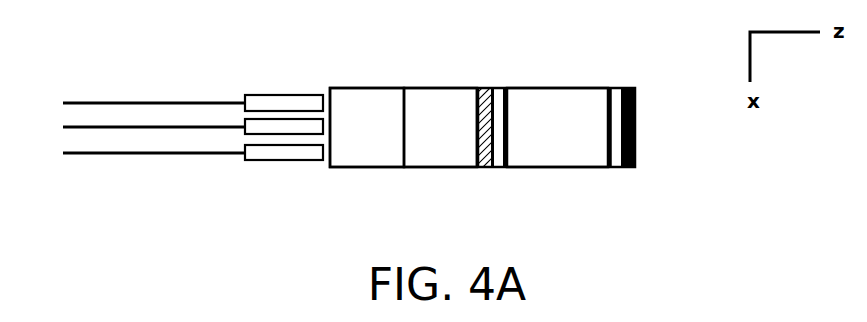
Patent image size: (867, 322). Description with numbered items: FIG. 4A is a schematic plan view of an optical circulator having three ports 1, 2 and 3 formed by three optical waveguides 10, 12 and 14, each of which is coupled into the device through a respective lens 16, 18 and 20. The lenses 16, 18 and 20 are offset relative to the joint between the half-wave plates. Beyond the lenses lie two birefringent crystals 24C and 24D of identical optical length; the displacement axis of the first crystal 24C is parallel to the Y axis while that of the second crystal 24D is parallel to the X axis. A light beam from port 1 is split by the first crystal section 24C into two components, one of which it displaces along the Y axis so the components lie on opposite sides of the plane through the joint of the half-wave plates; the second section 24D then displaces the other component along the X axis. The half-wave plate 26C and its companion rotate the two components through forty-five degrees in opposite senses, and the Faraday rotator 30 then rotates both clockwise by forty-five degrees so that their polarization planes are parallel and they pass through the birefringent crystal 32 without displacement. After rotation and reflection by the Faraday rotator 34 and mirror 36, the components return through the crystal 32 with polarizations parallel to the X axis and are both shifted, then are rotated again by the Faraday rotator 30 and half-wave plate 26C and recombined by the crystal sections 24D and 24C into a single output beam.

The port 1 is at (51, 103).
The port 2 is at (51, 126).
The port 3 is at (51, 156).
The optical waveguide 10 is at (110, 103).
The optical waveguide 12 is at (167, 127).
The optical waveguide 14 is at (133, 153).
The lens 16 is at (271, 103).
The lens 18 is at (286, 127).
The lens 20 is at (275, 154).
The birefringent crystal 24C is at (375, 104).
The birefringent crystal 24D is at (445, 108).
The half-wave plate 26C is at (487, 167).
The Faraday rotator 30 is at (503, 167).
The birefringent crystal 32 is at (565, 86).
The Faraday rotator 34 is at (614, 167).
The mirror 36 is at (631, 167).